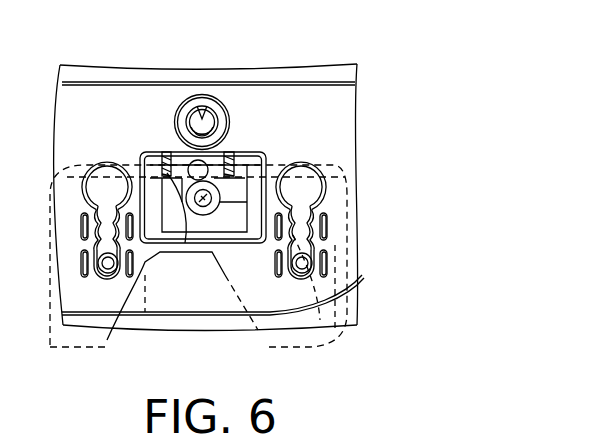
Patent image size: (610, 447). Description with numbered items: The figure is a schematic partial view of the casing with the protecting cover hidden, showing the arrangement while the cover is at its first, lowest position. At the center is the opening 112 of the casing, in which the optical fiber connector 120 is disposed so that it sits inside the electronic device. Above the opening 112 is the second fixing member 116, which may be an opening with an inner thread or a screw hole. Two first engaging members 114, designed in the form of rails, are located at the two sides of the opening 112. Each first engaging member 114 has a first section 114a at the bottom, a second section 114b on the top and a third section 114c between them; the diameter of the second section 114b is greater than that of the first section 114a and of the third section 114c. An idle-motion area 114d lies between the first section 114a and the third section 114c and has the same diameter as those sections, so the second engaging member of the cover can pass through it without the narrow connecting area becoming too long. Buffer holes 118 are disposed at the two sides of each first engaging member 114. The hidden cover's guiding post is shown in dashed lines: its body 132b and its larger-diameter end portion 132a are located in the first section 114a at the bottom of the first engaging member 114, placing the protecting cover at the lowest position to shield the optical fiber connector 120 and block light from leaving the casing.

The opening 112 is at (241, 151).
The first engaging member 114 is at (424, 234).
The first section 114a is at (310, 263).
The second section 114b is at (313, 182).
The third section 114c is at (308, 222).
The idle-motion area 114d is at (310, 247).
The second fixing member 116 is at (202, 118).
The buffer hole 118 is at (278, 268).
The optical fiber connector 120 is at (201, 202).
The end portion 132a is at (347, 303).
The body 132b is at (335, 338).